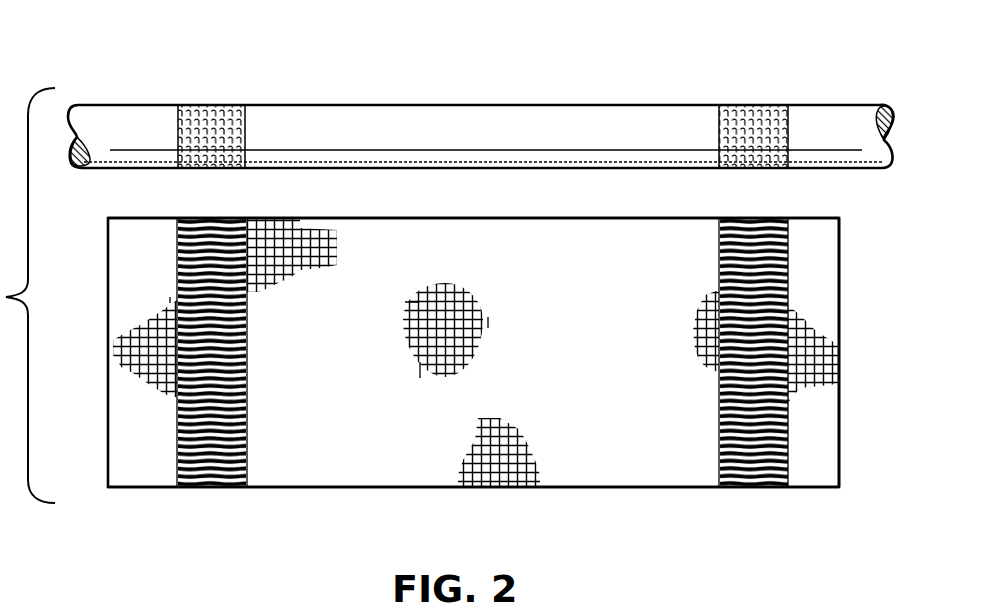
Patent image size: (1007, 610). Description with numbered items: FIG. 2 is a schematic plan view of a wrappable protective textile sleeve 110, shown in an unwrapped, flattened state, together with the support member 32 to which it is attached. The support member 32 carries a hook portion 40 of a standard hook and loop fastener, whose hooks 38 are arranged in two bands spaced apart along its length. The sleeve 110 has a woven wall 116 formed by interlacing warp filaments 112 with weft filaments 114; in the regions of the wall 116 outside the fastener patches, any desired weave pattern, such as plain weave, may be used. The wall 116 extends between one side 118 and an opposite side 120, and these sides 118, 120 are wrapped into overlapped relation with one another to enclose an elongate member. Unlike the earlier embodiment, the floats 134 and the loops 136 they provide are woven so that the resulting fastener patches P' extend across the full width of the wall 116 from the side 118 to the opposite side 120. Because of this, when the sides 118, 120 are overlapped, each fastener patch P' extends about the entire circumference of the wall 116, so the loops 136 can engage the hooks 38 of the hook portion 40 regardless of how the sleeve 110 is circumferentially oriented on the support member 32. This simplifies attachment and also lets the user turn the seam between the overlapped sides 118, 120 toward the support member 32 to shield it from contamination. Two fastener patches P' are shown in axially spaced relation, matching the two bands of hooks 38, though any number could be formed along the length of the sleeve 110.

The support member 32 is at (833, 128).
The hooks 38 is at (207, 118).
The hook portion 40 is at (222, 80).
The sleeve 110 is at (858, 272).
The warp filaments 112 is at (127, 325).
The weft filaments 114 is at (167, 305).
The wall 116 is at (806, 466).
The side 118 is at (568, 488).
The opposite side 120 is at (407, 217).
The floats 134 is at (254, 392).
The loops 136 is at (482, 352).
The fastener patches P' is at (483, 295).